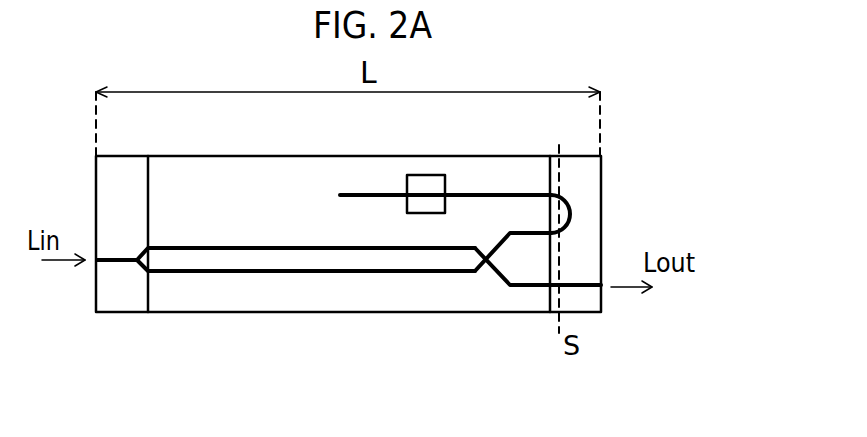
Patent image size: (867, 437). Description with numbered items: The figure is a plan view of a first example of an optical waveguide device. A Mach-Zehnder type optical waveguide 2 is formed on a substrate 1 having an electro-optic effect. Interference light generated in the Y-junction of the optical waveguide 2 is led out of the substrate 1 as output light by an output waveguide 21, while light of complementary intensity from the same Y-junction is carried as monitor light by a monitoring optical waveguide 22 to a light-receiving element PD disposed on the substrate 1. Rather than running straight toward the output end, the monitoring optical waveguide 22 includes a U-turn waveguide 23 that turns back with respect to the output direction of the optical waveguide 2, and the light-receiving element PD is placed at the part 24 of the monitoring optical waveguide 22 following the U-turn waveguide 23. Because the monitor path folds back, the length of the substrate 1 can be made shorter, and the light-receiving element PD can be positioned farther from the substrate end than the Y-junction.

The substrate 1 is at (305, 312).
The optical waveguide 2 is at (207, 279).
The output waveguide 21 is at (492, 276).
The monitoring optical waveguide 22 is at (503, 243).
The U-turn waveguide 23 is at (578, 207).
The part of the monitoring optical waveguide after the U-turn waveguide 24 is at (352, 193).
The light-receiving element PD is at (420, 175).